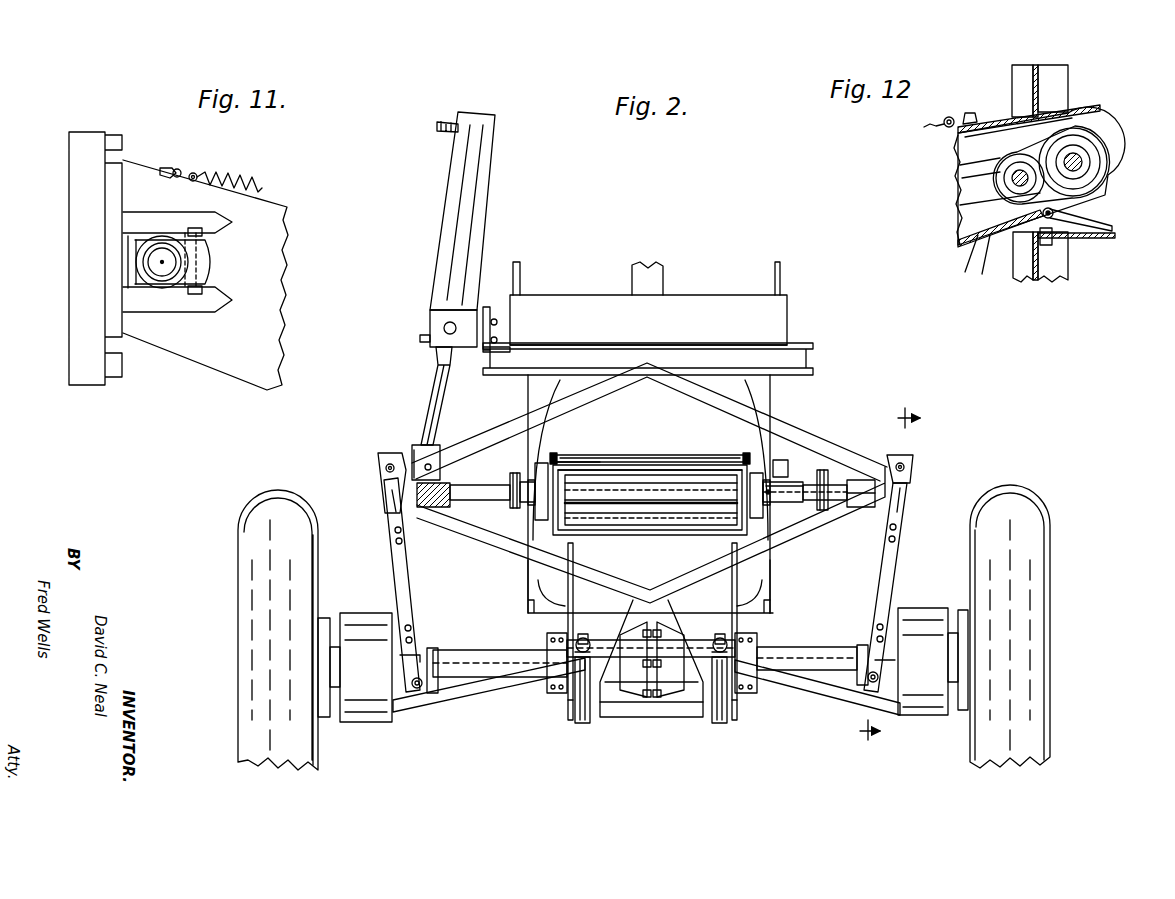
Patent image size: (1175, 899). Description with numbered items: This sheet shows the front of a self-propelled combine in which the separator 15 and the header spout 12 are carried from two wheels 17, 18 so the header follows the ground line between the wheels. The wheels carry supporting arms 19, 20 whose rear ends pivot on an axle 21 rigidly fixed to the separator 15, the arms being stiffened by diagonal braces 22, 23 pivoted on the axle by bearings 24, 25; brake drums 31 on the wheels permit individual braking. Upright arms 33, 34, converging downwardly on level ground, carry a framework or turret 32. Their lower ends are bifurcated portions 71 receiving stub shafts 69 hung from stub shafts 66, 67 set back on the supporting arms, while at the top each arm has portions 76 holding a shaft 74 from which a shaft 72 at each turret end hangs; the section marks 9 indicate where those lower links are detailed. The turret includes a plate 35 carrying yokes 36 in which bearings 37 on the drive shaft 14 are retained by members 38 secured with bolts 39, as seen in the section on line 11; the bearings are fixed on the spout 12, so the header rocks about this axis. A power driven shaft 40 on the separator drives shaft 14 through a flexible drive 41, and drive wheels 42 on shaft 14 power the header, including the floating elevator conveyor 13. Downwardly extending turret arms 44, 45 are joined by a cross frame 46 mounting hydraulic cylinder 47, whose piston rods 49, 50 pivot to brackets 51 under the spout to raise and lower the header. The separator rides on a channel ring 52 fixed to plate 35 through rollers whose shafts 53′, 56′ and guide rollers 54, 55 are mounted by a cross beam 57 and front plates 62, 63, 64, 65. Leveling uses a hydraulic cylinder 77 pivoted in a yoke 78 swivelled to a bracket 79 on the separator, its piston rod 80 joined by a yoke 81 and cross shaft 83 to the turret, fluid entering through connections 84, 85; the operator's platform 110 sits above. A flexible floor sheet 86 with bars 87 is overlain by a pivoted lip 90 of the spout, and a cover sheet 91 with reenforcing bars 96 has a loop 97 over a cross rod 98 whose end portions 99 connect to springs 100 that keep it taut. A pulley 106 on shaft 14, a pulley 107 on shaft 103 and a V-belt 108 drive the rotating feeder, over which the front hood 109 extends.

In FIG. 2, the section line 9- 9 is at (880, 574).
In FIG. 2, the section line 11— 11 is at (545, 449).
In FIG. 11, the header spout 12 is at (180, 345).
In FIG. 2, the header spout 12 is at (620, 535).
In FIG. 12, the floating elevator conveyor 13 is at (948, 170).
In FIG. 2, the floating elevator conveyor 13 is at (652, 530).
In FIG. 11, the drive shaft 14 is at (158, 262).
In FIG. 12, the drive shaft 14 is at (1010, 185).
In FIG. 2, the drive shaft 14 is at (770, 490).
In FIG. 2, the separator 15 is at (792, 333).
In FIG. 2, the wheel 17 is at (255, 640).
In FIG. 2, the wheel 18 is at (1040, 640).
In FIG. 2, the supporting arm 19 is at (375, 725).
In FIG. 2, the supporting arm 20 is at (922, 717).
In FIG. 2, the axle 21 is at (455, 650).
In FIG. 2, the diagonal brace 22 is at (480, 690).
In FIG. 2, the diagonal brace 23 is at (800, 700).
In FIG. 2, the bearing 24 is at (545, 655).
In FIG. 2, the bearing 25 is at (760, 655).
In FIG. 2, the brake drum 31 is at (323, 618).
In FIG. 12, the turret 32 is at (1018, 72).
In FIG. 2, the turret 32 is at (505, 445).
In FIG. 2, the upright arm 33 is at (395, 555).
In FIG. 2, the upright arm 34 is at (888, 585).
In FIG. 12, the plate 35 is at (1040, 92).
In FIG. 2, the plate 35 is at (622, 434).
In FIG. 11, the yoke 36 is at (135, 275).
In FIG. 2, the yoke 36 is at (535, 470).
In FIG. 11, the bearing 37 is at (163, 240).
In FIG. 2, the bearing 37 is at (525, 492).
In FIG. 11, the member 38 is at (212, 262).
In FIG. 2, the member 38 is at (540, 503).
In FIG. 11, the bolt 39 is at (200, 300).
In FIG. 2, the power driven shaft 40 is at (782, 462).
In FIG. 2, the flexible drive 41 is at (812, 483).
In FIG. 2, the drive wheel 42 is at (510, 488).
In FIG. 2, the arm 44 is at (570, 705).
In FIG. 2, the arm 45 is at (718, 725).
In FIG. 2, the cross frame 46 is at (652, 717).
In FIG. 2, the hydraulic cylinder 47 is at (585, 725).
In FIG. 2, the piston rod 49 is at (584, 638).
In FIG. 2, the piston rod 50 is at (718, 638).
In FIG. 2, the bracket 51 is at (962, 612).
In FIG. 12, the channel ring 52 is at (1052, 72).
In FIG. 2, the roller shaft 53′ is at (548, 402).
In FIG. 2, the guide roller 54 is at (551, 595).
In FIG. 2, the guide roller 55 is at (751, 593).
In FIG. 2, the roller shaft 56′ is at (758, 402).
In FIG. 2, the cross beam 57 is at (722, 360).
In FIG. 2, the front plate 62 is at (532, 387).
In FIG. 2, the front plate 63 is at (530, 592).
In FIG. 2, the front plate 64 is at (778, 585).
In FIG. 2, the front plate 65 is at (768, 412).
In FIG. 2, the stub shaft 66 is at (433, 648).
In FIG. 2, the stub shaft 67 is at (860, 648).
In FIG. 2, the stub shaft 69 is at (418, 690).
In FIG. 2, the bifurcated portion 71 is at (415, 660).
In FIG. 2, the shaft 72 is at (437, 505).
In FIG. 2, the shaft 74 is at (386, 468).
In FIG. 2, the portion 76 is at (392, 490).
In FIG. 2, the hydraulic cylinder 77 is at (455, 197).
In FIG. 2, the yoke 78 is at (432, 318).
In FIG. 2, the bracket 79 is at (488, 305).
In FIG. 2, the piston rod 80 is at (433, 375).
In FIG. 2, the yoke 81 is at (415, 450).
In FIG. 2, the cross shaft 83 is at (431, 465).
In FIG. 2, the connection 84 is at (444, 122).
In FIG. 2, the connection 85 is at (420, 338).
In FIG. 12, the flexible lower floor sheet 86 is at (1075, 233).
In FIG. 12, the bar 87 is at (1118, 235).
In FIG. 12, the pivoted lip 90 is at (1045, 212).
In FIG. 12, the cover sheet 91 is at (1100, 107).
In FIG. 12, the reenforcing bar 96 is at (1095, 110).
In FIG. 11, the loop 97 is at (175, 165).
In FIG. 12, the loop 97 is at (970, 112).
In FIG. 2, the loop 97 is at (655, 455).
In FIG. 11, the cross rod 98 is at (181, 171).
In FIG. 12, the cross rod 98 is at (946, 117).
In FIG. 11, the end portion 99 is at (194, 181).
In FIG. 12, the end portion 99 is at (947, 127).
In FIG. 2, the end portion 99 is at (555, 453).
In FIG. 11, the spring 100 is at (236, 172).
In FIG. 12, the spring 100 is at (924, 125).
In FIG. 2, the spring 100 is at (560, 458).
In FIG. 12, the shaft 103 is at (1090, 163).
In FIG. 12, the pulley 106 is at (1015, 172).
In FIG. 12, the pulley 107 is at (1095, 140).
In FIG. 12, the V-belt 108 is at (1100, 218).
In FIG. 12, the front hood 109 is at (1100, 150).
In FIG. 2, the operator's platform 110 is at (700, 300).